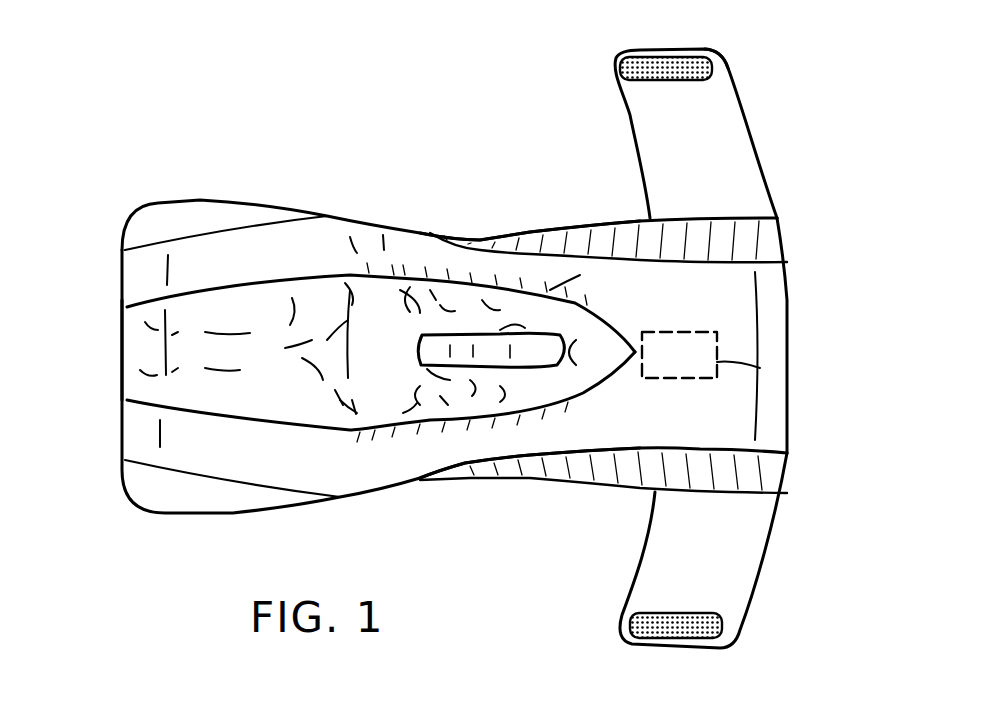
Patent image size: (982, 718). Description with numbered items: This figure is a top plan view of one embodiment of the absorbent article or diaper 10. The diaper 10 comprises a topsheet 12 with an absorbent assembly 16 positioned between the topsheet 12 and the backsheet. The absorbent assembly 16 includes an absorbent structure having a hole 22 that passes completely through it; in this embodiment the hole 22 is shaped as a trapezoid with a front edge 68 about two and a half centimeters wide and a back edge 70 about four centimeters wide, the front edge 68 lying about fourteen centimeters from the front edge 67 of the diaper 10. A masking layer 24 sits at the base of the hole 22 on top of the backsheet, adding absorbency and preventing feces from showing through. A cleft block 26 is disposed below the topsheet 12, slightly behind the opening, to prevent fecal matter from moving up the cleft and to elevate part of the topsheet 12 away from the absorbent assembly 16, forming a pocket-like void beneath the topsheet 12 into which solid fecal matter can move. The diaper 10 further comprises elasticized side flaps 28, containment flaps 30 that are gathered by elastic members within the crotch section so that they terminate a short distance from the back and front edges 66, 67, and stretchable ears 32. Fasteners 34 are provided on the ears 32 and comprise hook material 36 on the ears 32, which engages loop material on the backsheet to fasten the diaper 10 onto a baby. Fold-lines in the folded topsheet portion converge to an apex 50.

The absorbent article 10 is at (305, 92).
The topsheet 12 is at (735, 310).
The absorbent assembly 16 is at (468, 328).
The hole 22 is at (560, 380).
The masking layer 24 is at (557, 331).
The cleft block 26 is at (760, 368).
The elasticized side flaps 28 is at (587, 222).
The containment flaps 30 is at (536, 232).
The stretchable ears 32 is at (738, 138).
The fasteners 34 is at (722, 57).
The hook material 36 is at (618, 52).
The apex 50 is at (642, 353).
The back edge 66 is at (788, 410).
The front edge 67 is at (120, 342).
The front edge of hole 68 is at (430, 377).
The back edge of hole 70 is at (592, 354).